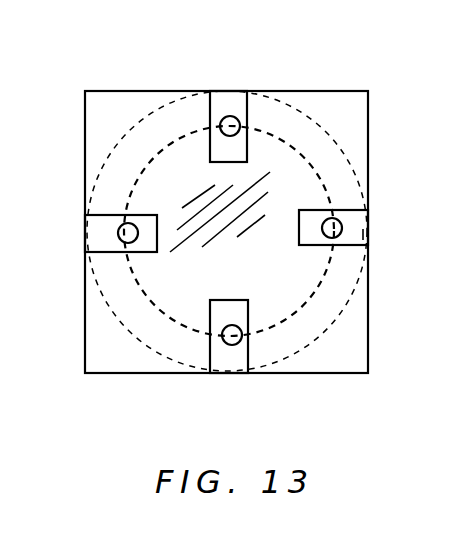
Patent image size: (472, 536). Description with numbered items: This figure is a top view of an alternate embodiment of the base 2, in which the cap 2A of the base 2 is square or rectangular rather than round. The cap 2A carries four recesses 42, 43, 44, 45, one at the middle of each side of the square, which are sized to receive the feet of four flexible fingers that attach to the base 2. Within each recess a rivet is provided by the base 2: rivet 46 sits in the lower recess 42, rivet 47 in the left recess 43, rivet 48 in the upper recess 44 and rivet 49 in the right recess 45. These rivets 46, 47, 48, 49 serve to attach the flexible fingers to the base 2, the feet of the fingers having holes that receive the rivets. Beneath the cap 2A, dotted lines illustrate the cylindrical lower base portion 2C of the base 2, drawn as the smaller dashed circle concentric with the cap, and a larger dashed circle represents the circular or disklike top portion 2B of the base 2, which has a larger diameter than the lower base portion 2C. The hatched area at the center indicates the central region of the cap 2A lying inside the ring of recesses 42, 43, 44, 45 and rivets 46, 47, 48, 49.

The base 2 is at (125, 63).
The cap 2A is at (98, 119).
The top portion 2B is at (308, 115).
The lower base portion 2C is at (305, 153).
The recess 42 is at (228, 363).
The recess 43 is at (95, 233).
The recess 44 is at (222, 100).
The recess 45 is at (368, 237).
The rivet 46 is at (232, 323).
The rivet 47 is at (130, 244).
The rivet 48 is at (232, 116).
The rivet 49 is at (342, 226).